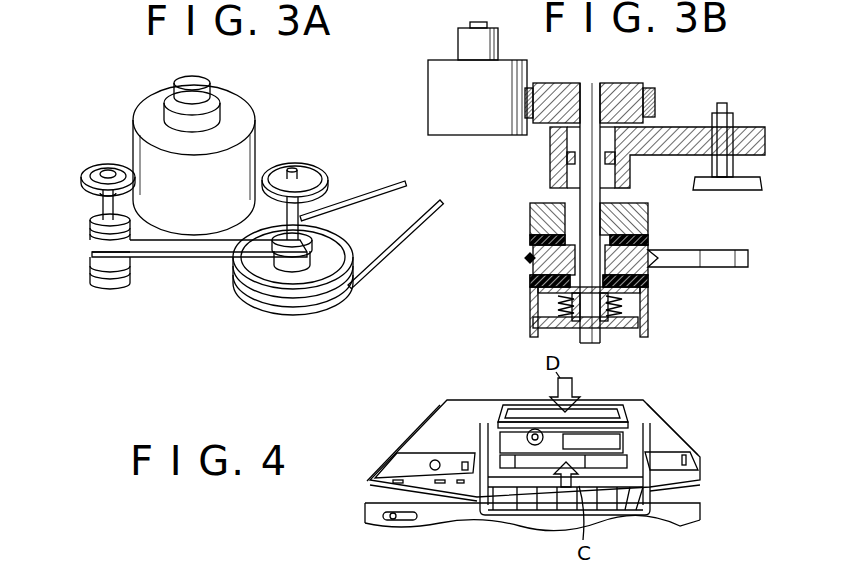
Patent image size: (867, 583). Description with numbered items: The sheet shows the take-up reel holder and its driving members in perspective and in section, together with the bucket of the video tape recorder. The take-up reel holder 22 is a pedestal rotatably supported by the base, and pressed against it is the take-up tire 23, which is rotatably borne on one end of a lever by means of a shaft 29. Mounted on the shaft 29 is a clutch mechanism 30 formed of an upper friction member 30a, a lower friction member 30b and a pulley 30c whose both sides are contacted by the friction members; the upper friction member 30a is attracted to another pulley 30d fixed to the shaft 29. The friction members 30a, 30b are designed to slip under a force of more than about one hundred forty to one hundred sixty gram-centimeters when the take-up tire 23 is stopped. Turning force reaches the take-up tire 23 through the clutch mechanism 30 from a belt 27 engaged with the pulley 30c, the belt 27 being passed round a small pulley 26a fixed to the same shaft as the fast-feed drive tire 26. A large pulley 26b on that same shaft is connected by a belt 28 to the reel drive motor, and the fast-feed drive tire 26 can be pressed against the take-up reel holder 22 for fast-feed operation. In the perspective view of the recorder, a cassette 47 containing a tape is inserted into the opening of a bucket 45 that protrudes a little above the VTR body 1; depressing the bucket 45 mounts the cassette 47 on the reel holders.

In FIG. 4, the VTR body 1 is at (432, 438).
In FIG. 3A, the take-up reel holder 22 is at (255, 137).
In FIG. 3B, the take-up reel holder 22 is at (465, 128).
In FIG. 3A, the take-up tire 23 is at (102, 157).
In FIG. 3B, the take-up tire 23 is at (558, 83).
In FIG. 3A, the fast-feed drive tire 26 is at (328, 174).
In FIG. 3A, the small pulley 26a is at (313, 230).
In FIG. 3A, the large pulley 26b is at (343, 265).
In FIG. 3A, the belt 27 is at (187, 258).
In FIG. 3B, the belt 27 is at (718, 258).
In FIG. 3A, the belt 28 is at (407, 240).
In FIG. 3A, the shaft 29 is at (98, 208).
In FIG. 3B, the shaft 29 is at (588, 90).
In FIG. 3A, the clutch mechanism 30 is at (74, 257).
In FIG. 3B, the clutch mechanism 30 is at (592, 270).
In FIG. 3A, the upper friction member 30a is at (92, 233).
In FIG. 3B, the upper friction member 30a is at (530, 240).
In FIG. 3A, the lower friction member 30b is at (88, 272).
In FIG. 3B, the lower friction member 30b is at (530, 283).
In FIG. 3B, the pulley 30c is at (650, 280).
In FIG. 3B, the pulley 30d is at (648, 222).
In FIG. 4, the bucket 45 is at (610, 413).
In FIG. 4, the cassette 47 is at (623, 455).